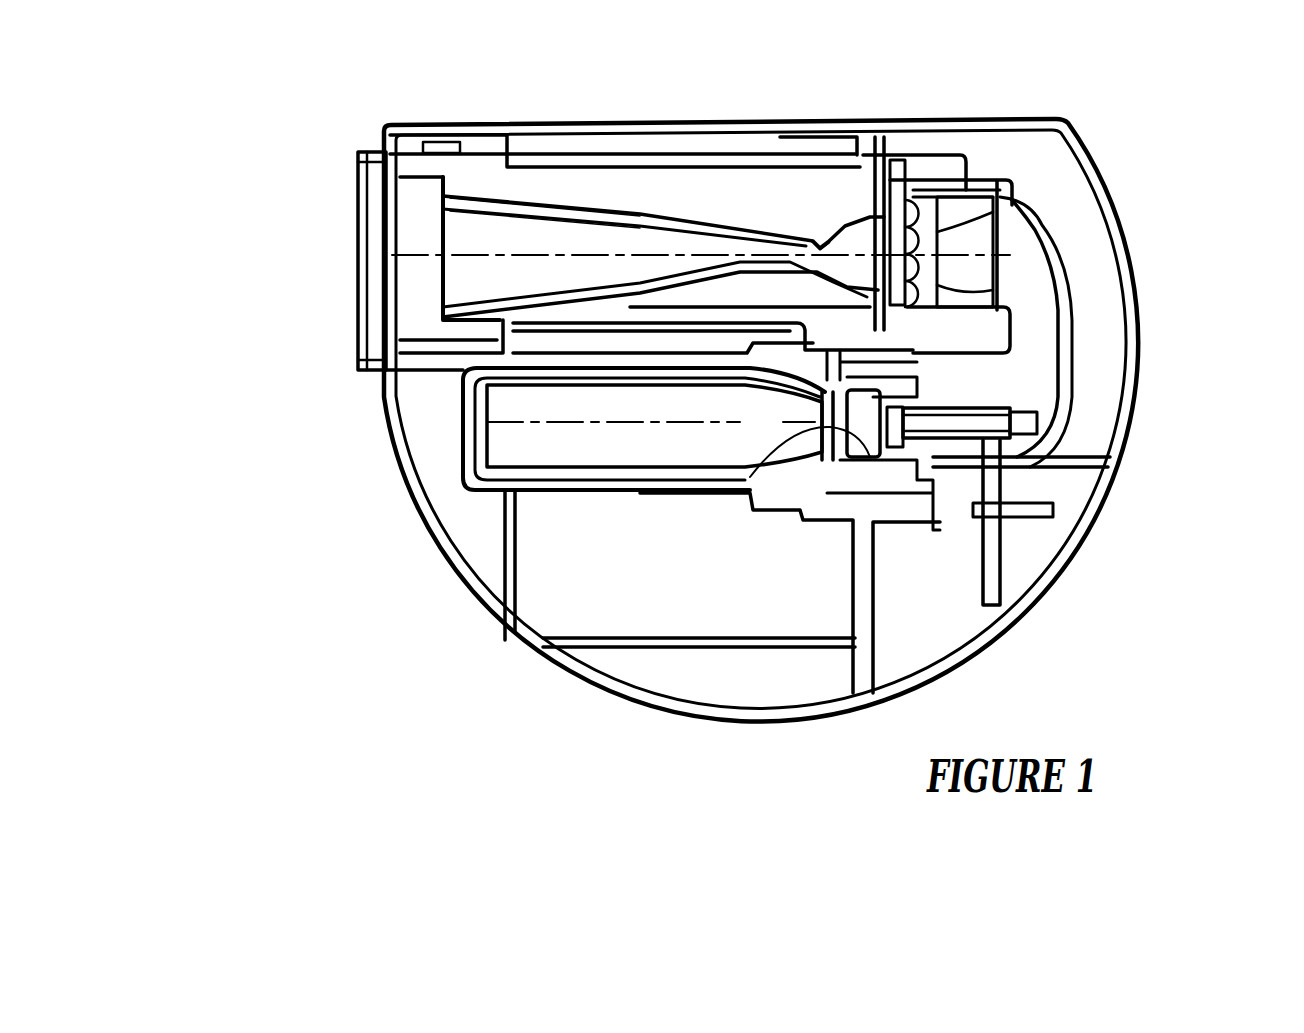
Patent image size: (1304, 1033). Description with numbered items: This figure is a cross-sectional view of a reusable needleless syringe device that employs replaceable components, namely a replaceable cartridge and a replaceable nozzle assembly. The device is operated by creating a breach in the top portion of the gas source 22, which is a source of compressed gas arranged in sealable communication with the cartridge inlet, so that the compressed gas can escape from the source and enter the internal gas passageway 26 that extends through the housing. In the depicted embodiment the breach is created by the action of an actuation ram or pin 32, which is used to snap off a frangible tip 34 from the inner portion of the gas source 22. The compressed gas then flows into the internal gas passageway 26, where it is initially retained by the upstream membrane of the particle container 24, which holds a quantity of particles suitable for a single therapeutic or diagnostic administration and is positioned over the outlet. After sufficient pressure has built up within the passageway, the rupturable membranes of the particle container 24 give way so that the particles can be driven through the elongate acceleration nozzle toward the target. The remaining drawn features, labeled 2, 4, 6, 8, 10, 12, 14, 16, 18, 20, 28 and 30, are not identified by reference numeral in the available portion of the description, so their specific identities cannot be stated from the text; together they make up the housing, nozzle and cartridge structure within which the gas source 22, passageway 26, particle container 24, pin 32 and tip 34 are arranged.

The device 2 is at (350, 493).
The nozzle tube 4 is at (657, 213).
The wall 6 is at (832, 243).
The tube wall 8 is at (538, 224).
The notch 10 is at (817, 240).
The end cap 12 is at (356, 164).
The tube surface 14 is at (548, 215).
The housing interior 16 is at (600, 607).
The housing 18 is at (1072, 267).
The valve block 20 is at (997, 183).
The gas source 22 is at (537, 443).
The particle container 24 is at (932, 195).
The internal gas passageway 26 is at (1032, 380).
The contact 28 is at (750, 477).
The valve seat 30 is at (940, 232).
The actuation ram or pin 32 is at (990, 568).
The frangible tip 34 is at (1005, 398).